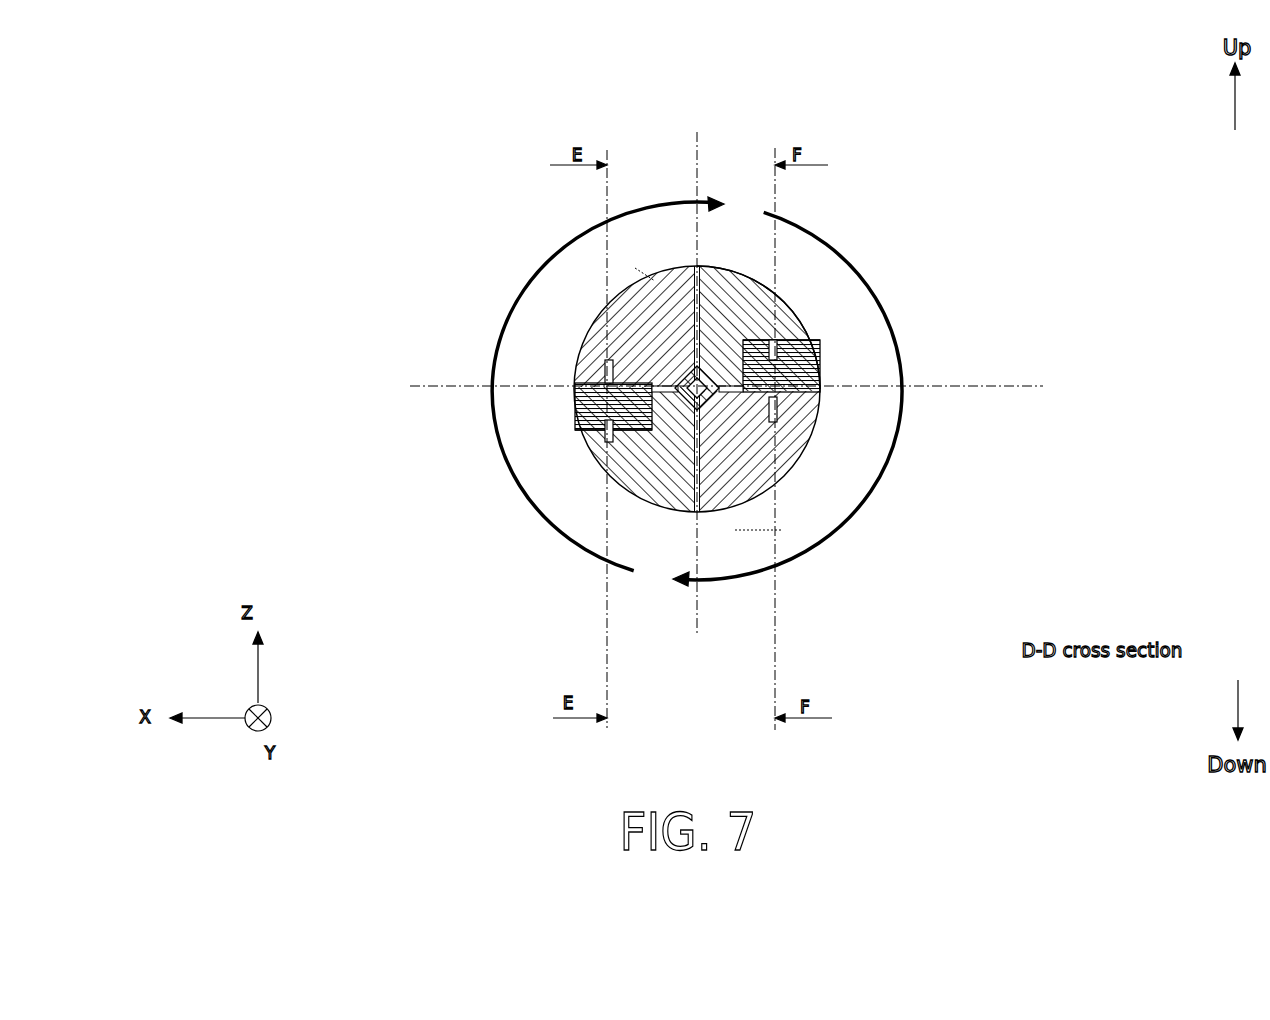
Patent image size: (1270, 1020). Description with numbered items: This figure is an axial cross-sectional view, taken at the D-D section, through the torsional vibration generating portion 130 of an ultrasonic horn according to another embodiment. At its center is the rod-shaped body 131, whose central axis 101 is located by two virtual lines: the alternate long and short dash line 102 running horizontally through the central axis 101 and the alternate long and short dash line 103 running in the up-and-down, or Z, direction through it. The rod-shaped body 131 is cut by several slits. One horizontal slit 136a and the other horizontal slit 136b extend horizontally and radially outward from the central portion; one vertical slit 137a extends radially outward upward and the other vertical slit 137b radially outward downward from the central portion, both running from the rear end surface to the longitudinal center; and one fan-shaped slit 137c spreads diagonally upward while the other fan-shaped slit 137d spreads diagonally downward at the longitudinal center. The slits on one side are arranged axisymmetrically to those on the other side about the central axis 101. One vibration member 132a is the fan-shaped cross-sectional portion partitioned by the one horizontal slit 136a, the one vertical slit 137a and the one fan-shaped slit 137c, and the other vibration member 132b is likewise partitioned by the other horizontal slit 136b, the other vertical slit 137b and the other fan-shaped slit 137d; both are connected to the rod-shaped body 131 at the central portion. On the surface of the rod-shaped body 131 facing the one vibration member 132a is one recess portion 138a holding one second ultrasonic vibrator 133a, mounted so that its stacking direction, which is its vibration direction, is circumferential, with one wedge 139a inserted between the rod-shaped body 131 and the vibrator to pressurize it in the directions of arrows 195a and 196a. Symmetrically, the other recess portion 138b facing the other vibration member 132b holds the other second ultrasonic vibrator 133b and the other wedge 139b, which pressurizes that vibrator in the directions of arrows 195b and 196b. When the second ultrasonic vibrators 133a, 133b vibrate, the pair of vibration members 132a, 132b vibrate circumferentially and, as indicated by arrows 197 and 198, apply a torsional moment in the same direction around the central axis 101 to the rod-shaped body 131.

The torsional vibration generating portion 130 is at (348, 116).
The central axis 101 is at (722, 267).
The alternate long and short dash line 102 is at (1043, 385).
The alternate long and short dash line 103 is at (695, 617).
The rod-shaped body 131 is at (795, 310).
The one vibration member 132a is at (607, 293).
The other vibration member 132b is at (780, 490).
The one second ultrasonic vibrator 133a is at (577, 380).
The other second ultrasonic vibrator 133b is at (822, 410).
The one horizontal slit 136a is at (573, 388).
The other horizontal slit 136b is at (822, 385).
The one vertical slit 137a is at (695, 262).
The other vertical slit 137b is at (697, 513).
The one fan-shaped slit 137c is at (645, 275).
The other fan-shaped slit 137d is at (747, 508).
The one recess portion 138a is at (650, 503).
The other recess portion 138b is at (735, 275).
The one wedge 139a is at (577, 435).
The other wedge 139b is at (822, 347).
The arrow 195a is at (582, 446).
The arrow 195b is at (800, 338).
The arrow 196a is at (580, 340).
The arrow 196b is at (817, 440).
The arrow 197 is at (876, 287).
The arrow 198 is at (515, 489).